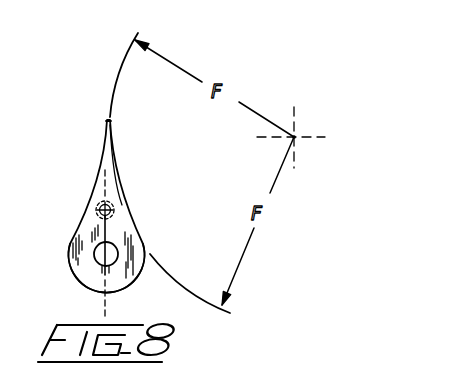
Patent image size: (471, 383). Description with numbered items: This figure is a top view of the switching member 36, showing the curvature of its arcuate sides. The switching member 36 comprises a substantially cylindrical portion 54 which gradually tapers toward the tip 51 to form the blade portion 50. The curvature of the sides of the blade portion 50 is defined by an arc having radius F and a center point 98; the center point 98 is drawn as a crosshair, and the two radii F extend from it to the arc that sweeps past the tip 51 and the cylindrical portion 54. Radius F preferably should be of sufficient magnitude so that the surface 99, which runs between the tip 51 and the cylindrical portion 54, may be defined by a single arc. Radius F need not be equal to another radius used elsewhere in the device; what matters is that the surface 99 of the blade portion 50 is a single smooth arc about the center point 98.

The switching member 36 is at (58, 278).
The blade portion 50 is at (97, 184).
The tip 51 is at (107, 119).
The cylindrical portion 54 is at (113, 277).
The center point 98 is at (303, 131).
The surface 99 is at (123, 197).